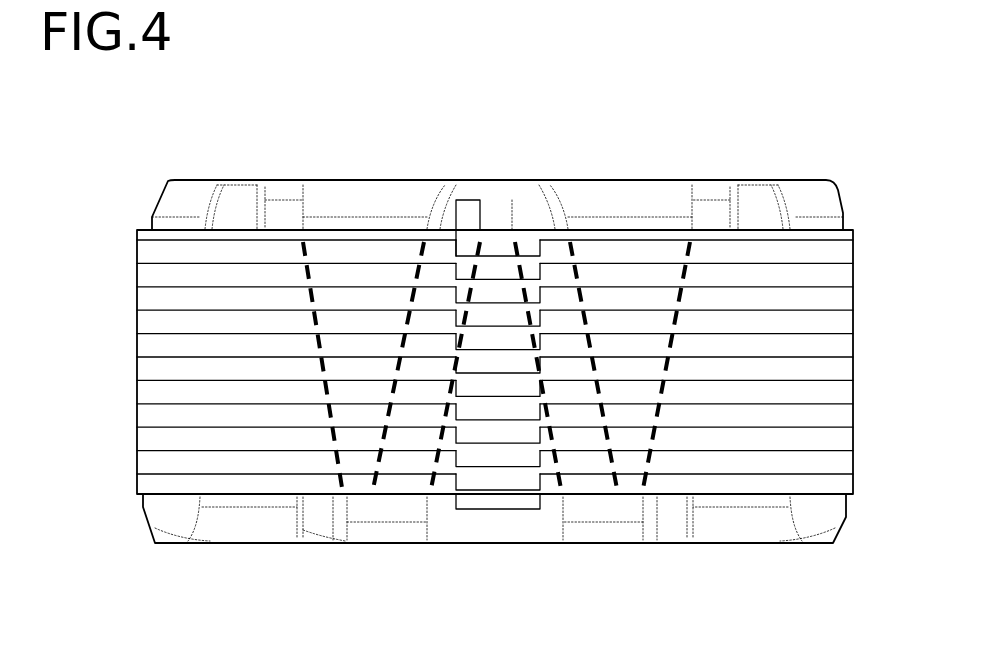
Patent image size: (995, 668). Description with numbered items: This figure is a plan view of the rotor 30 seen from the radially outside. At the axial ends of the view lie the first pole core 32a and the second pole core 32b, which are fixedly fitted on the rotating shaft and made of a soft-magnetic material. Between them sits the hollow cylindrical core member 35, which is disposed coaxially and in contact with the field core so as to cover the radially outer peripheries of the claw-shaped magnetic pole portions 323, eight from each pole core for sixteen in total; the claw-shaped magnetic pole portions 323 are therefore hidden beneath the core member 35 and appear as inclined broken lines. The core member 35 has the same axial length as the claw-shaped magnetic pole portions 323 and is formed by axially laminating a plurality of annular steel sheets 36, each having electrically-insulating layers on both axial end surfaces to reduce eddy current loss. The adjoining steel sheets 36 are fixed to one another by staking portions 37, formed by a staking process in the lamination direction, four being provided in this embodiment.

The rotor 30 is at (204, 168).
The first pole core 32a is at (315, 179).
The second pole core 32b is at (307, 547).
The core member 35 is at (625, 238).
The steel sheets 36 is at (775, 323).
The staking portions 37 is at (500, 268).
The claw-shaped magnetic pole portions 323 is at (547, 408).